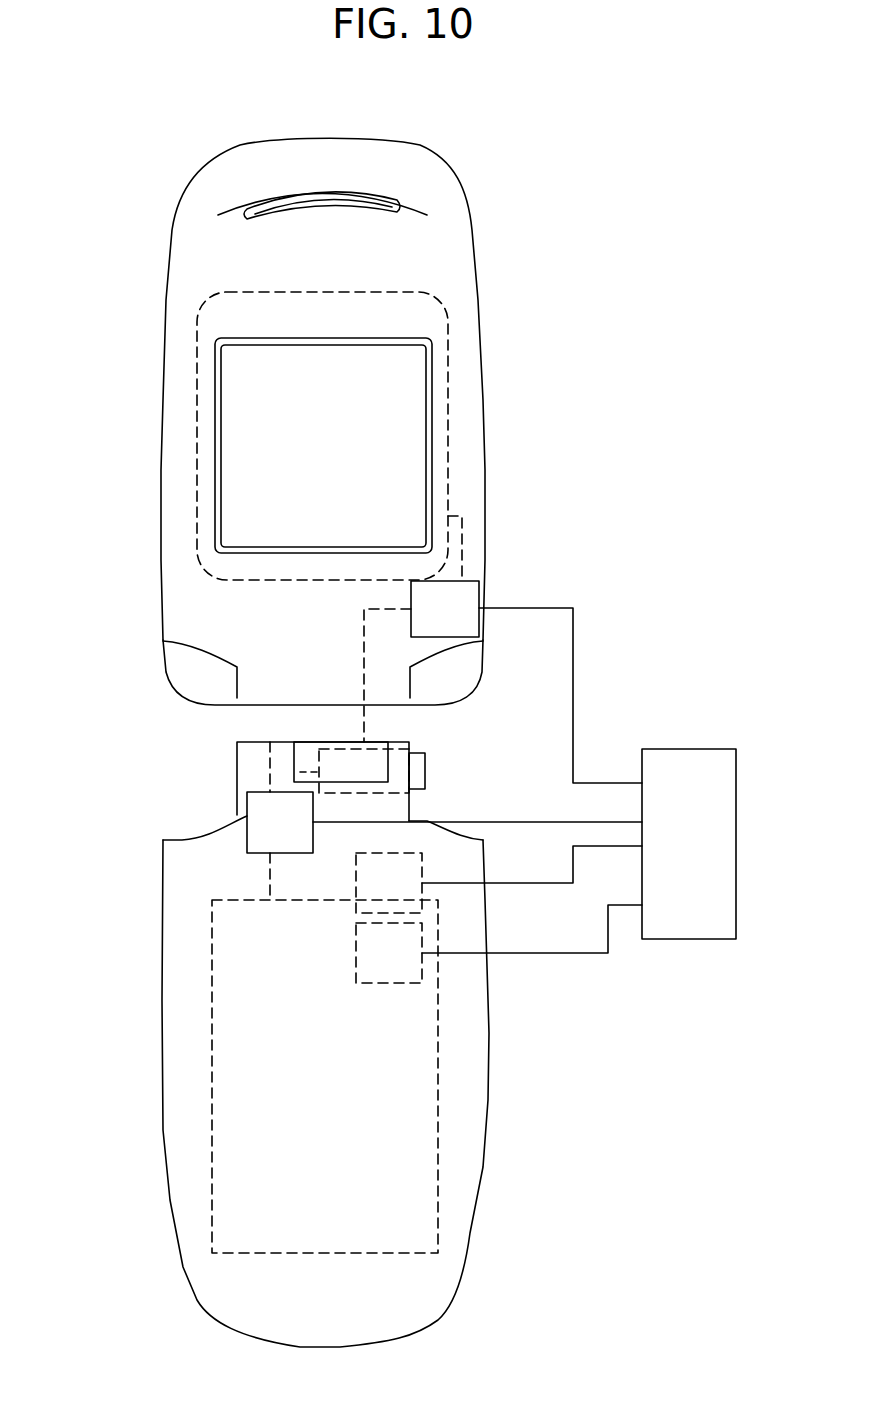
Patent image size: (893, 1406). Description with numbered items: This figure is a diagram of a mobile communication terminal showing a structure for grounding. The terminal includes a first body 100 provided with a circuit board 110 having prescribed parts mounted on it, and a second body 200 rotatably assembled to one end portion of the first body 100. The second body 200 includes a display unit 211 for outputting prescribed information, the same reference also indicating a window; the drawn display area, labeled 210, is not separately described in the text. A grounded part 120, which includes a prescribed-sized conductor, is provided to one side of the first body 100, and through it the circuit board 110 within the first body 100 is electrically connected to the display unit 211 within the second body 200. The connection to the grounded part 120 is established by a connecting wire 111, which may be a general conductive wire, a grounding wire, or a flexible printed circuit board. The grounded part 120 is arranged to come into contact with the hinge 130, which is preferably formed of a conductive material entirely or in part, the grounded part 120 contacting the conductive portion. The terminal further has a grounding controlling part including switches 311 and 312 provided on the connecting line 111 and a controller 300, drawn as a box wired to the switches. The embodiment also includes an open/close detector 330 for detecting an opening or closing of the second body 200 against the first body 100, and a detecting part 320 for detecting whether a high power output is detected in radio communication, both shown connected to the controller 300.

The first body 100 is at (488, 1063).
The circuit board 110 is at (212, 1002).
The connecting wire 111 is at (363, 677).
The grounded part 120 is at (372, 758).
The hinge 130 is at (420, 772).
The second body 200 is at (483, 310).
The display 210 is at (240, 447).
The display unit 211 is at (448, 470).
The controller 300 is at (692, 765).
The switch 311 is at (247, 815).
The switch 312 is at (483, 588).
The detecting part 320 is at (356, 945).
The open/close detector 330 is at (356, 875).